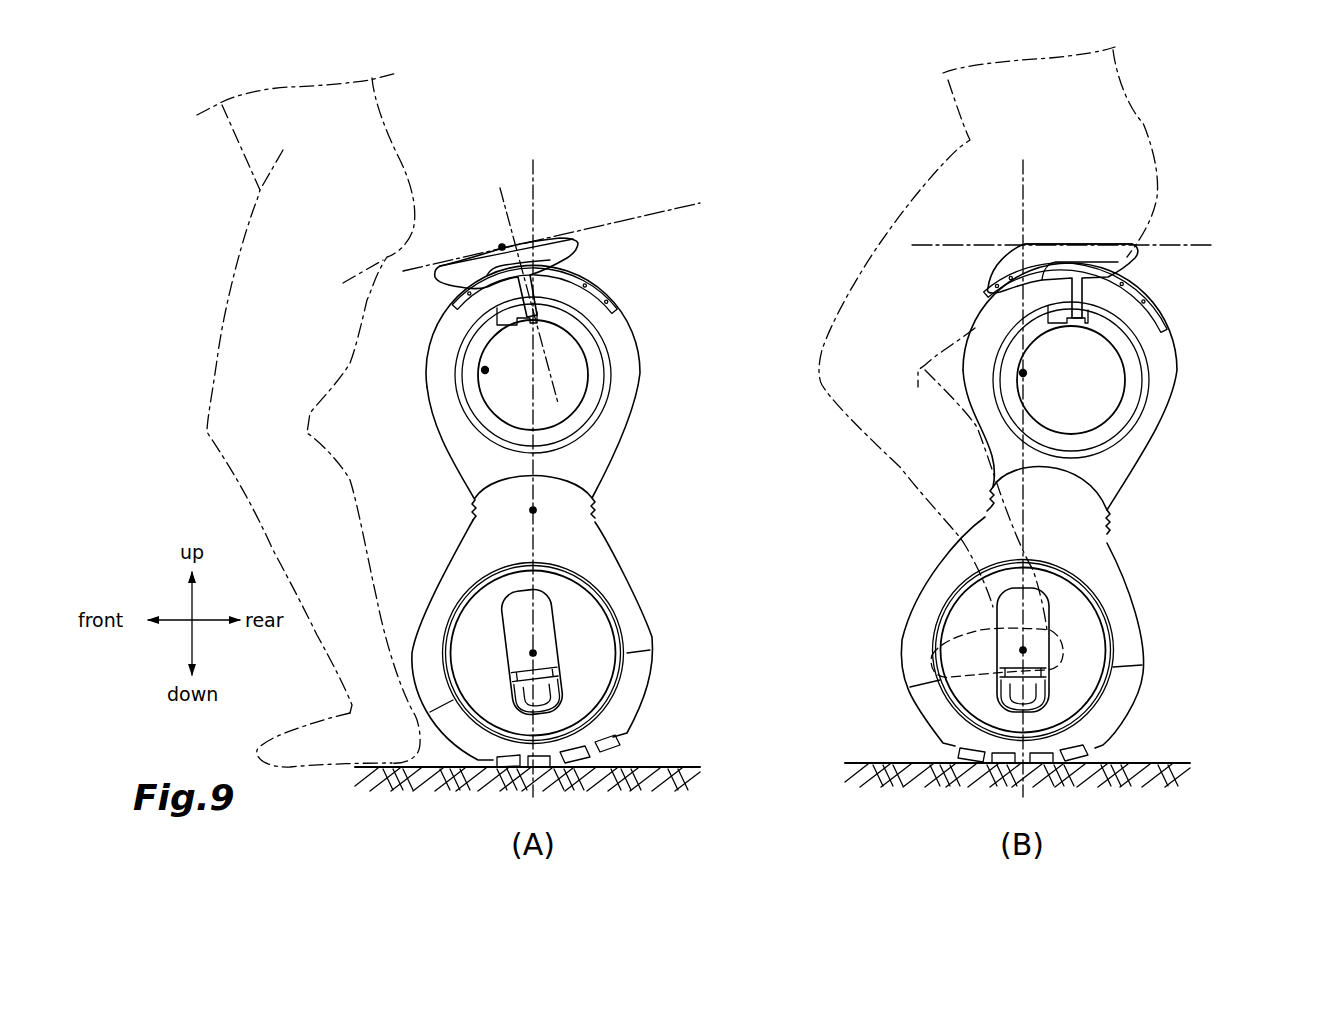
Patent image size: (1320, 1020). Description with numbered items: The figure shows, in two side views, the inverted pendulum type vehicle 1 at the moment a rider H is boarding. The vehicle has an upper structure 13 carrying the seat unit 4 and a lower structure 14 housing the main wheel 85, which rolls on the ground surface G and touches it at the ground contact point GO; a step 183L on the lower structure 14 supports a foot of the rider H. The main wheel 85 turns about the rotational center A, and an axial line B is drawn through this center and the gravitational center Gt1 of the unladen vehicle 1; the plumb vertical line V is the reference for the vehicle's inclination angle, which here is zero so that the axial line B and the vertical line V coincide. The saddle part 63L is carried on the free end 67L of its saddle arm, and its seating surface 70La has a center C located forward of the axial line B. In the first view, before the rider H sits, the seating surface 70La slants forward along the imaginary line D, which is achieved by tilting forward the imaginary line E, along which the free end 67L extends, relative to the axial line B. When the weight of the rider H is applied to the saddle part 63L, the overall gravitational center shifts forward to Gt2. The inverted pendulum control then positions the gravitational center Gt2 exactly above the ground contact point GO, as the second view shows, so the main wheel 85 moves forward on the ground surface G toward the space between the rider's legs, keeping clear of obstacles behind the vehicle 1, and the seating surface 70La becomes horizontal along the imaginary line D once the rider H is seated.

The inverted pendulum type vehicle 1 is at (783, 416).
The seat unit 4 is at (868, 192).
The upper structure 13 is at (648, 400).
The lower structure 14 is at (633, 574).
The saddle part 63L is at (567, 258).
The free end of saddle arm 67L is at (570, 330).
The seating surface 70La is at (533, 240).
The main wheel 85 is at (605, 750).
The step 183L is at (548, 690).
The rotational center of the main wheel A is at (537, 653).
The axial line B is at (783, 466).
The plumb vertical axial line V is at (778, 478).
The center of the seating surface C is at (491, 243).
The imaginary line D is at (668, 207).
The imaginary line E is at (519, 289).
The ground surface G is at (672, 767).
The ground contact point GO is at (533, 797).
The gravitational center of the vehicle Gt1 is at (553, 512).
The gravitational center of the vehicle with a seated rider Gt2 is at (485, 370).
The rider H is at (378, 112).